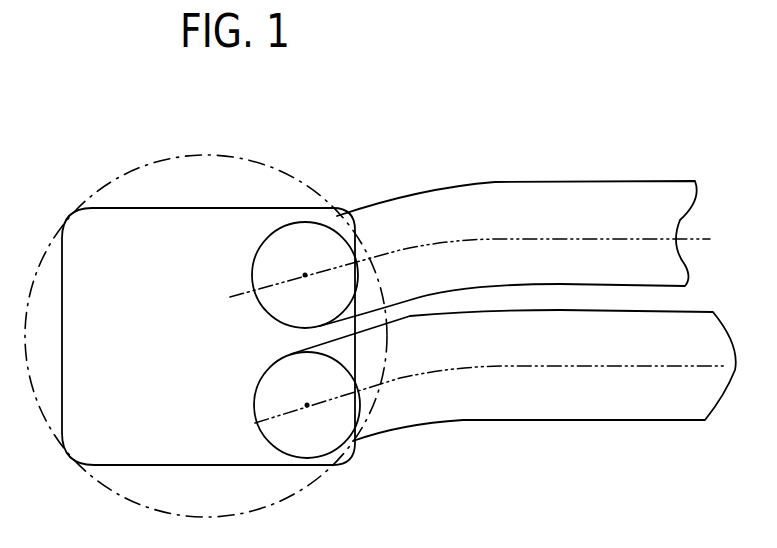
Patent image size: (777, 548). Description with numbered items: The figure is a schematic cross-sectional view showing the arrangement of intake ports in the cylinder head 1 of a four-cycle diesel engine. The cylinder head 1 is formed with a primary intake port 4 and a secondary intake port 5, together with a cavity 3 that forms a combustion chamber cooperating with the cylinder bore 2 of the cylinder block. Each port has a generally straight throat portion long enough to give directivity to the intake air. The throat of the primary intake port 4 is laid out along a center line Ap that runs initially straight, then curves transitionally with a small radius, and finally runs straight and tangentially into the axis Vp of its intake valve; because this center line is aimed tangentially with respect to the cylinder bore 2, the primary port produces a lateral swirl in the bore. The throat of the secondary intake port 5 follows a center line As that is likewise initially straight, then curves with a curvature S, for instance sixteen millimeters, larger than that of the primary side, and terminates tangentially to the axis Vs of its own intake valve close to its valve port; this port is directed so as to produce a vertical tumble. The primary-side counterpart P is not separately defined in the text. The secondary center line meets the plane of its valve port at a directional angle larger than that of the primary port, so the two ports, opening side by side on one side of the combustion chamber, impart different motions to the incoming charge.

The cylinder head 1 is at (481, 293).
The cylinder bore 2 is at (133, 170).
The cavity 3 is at (108, 445).
The primary intake port 4 is at (340, 422).
The secondary intake port 5 is at (332, 233).
The curvature S is at (237, 303).
The lower strip (sheet) P is at (253, 430).
The axis of intake valve Vs is at (305, 275).
The axis of intake valve Vp is at (307, 407).
The center line As is at (499, 236).
The center line Ap is at (515, 368).